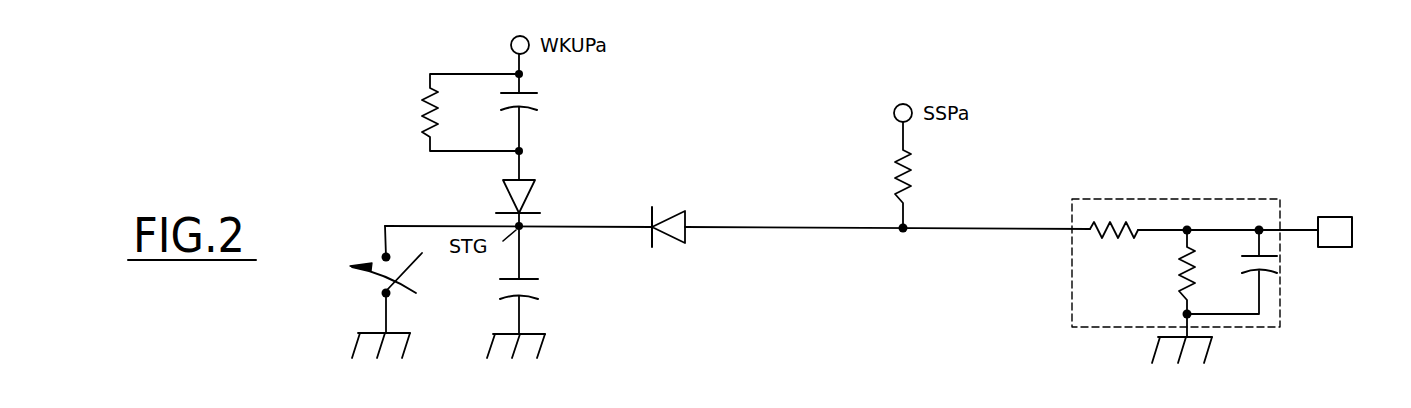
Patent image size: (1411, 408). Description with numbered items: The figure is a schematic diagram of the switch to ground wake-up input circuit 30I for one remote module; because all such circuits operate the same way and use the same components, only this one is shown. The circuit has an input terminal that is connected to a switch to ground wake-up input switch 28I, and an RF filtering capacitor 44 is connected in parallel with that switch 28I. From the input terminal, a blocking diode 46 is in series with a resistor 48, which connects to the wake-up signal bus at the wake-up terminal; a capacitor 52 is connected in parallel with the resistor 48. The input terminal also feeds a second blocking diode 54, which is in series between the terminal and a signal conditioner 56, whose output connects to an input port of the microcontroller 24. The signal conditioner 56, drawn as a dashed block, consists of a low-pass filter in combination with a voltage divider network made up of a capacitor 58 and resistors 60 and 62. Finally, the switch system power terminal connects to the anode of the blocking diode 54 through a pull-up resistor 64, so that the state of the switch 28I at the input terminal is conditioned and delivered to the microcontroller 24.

The microcontroller 24 is at (1333, 216).
The switch to ground wake-up input switch 28I is at (378, 282).
The switch to ground wake-up input circuit 30I is at (1148, 103).
The RF filtering capacitor 44 is at (534, 280).
The blocking diode 46 is at (503, 185).
The resistor 48 is at (422, 112).
The capacitor 52 is at (532, 95).
The blocking diode 54 is at (684, 212).
The signal conditioner 56 is at (1190, 197).
The capacitor 58 is at (1264, 271).
The resistor 60 is at (1110, 218).
The resistor 62 is at (1181, 258).
The pull-up resistor 64 is at (896, 163).